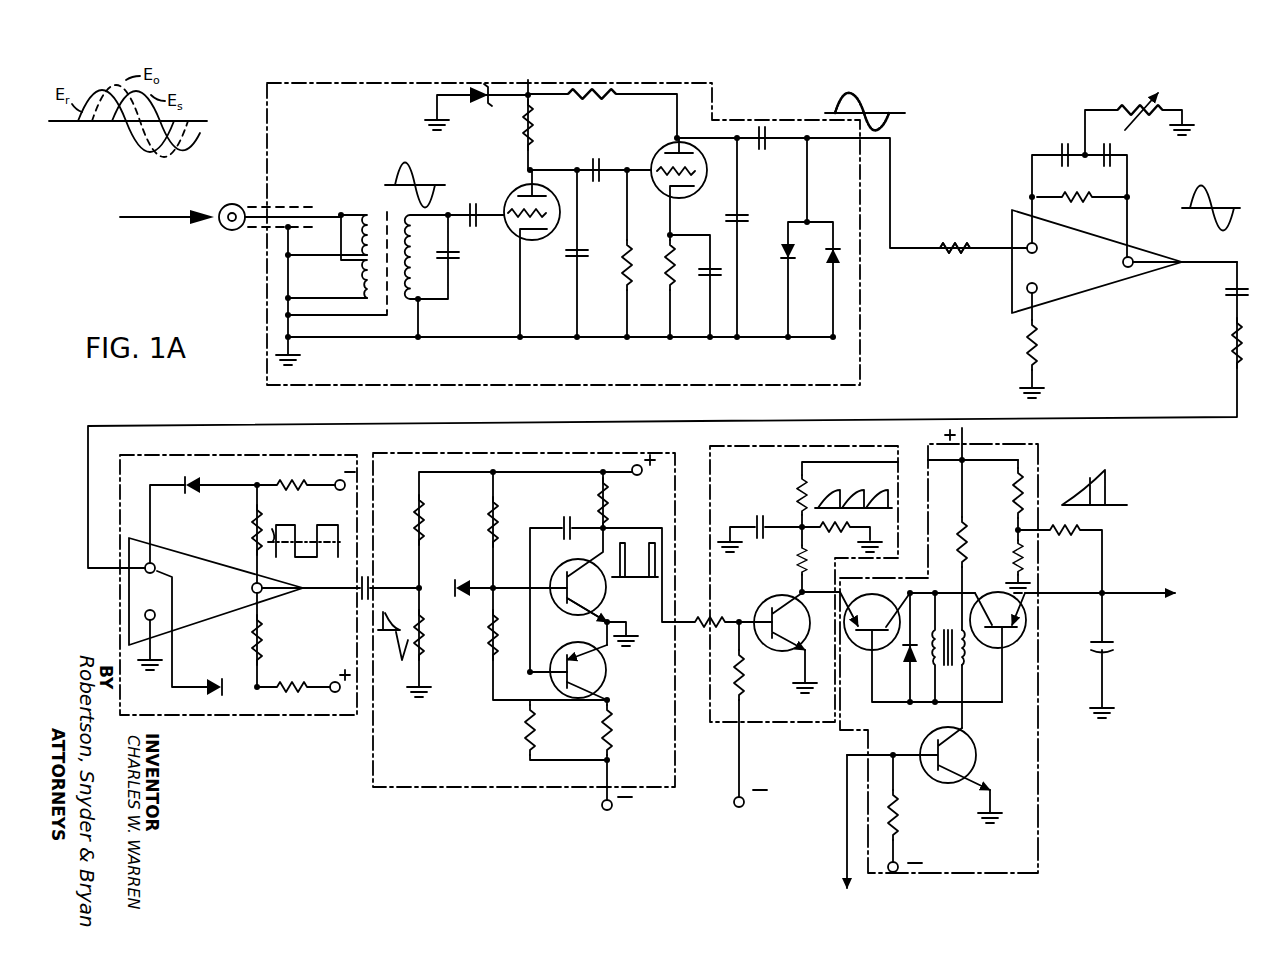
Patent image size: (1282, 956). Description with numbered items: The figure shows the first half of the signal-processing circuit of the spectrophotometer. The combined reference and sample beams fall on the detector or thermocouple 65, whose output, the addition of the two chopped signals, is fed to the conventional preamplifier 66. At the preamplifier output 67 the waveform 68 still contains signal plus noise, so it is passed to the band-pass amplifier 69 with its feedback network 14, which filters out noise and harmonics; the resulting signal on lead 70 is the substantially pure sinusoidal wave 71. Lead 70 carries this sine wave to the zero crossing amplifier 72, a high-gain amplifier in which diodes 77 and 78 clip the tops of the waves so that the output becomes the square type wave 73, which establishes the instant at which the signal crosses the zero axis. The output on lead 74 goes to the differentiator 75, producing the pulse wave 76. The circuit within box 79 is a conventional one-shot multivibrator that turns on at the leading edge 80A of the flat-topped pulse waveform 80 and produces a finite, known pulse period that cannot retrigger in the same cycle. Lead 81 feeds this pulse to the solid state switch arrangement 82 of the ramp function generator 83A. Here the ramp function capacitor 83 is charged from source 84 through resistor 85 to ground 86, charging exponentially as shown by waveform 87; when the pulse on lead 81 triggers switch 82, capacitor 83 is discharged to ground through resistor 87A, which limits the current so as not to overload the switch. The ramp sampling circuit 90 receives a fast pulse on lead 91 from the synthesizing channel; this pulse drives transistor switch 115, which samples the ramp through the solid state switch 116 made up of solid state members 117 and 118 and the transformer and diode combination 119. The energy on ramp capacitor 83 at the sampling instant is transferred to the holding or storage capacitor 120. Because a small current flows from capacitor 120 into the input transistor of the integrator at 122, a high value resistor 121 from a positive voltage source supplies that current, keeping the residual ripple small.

The feedback network 14 is at (1050, 140).
The detector or thermocouple 65 is at (238, 205).
The preamplifier 66 is at (481, 385).
The output of preamplifier 67 is at (832, 138).
The waveform of signal and noise 68 is at (893, 120).
The band-pass amplifier 69 is at (1088, 278).
The lead 70 is at (1216, 262).
The output signal waveform 71 is at (1194, 198).
The zero crossing amplifier 72 is at (240, 605).
The square type wave 73 is at (282, 526).
The lead 74 is at (343, 595).
The differentiator 75 is at (378, 586).
The pulse wave 76 is at (388, 650).
The diode 77 is at (212, 681).
The diode 78 is at (195, 490).
The one-shot multivibrator 79 is at (531, 644).
The pulse waveform 80 is at (637, 578).
The leading edge 80A is at (620, 546).
The lead 81 is at (688, 620).
The solid state switch arrangement 82 is at (762, 606).
The ramp function capacitor 83 is at (755, 522).
The ramp function generator 83A is at (918, 626).
The source 84 is at (964, 442).
The resistor 85 is at (801, 492).
The ground 86 is at (811, 548).
The ramp waveform 87 is at (876, 480).
The resistor 87A is at (799, 564).
The ramp sampling circuit 90 is at (994, 654).
The lead 91 is at (847, 826).
The transistor switch 115 is at (977, 755).
The solid state switch 116 is at (940, 586).
The solid state member 117 is at (893, 598).
The solid state member 118 is at (999, 592).
The transformer and diode combination 119 is at (970, 662).
The holding or storage capacitor 120 is at (1110, 652).
The high value resistor 121 is at (1078, 534).
The integrator input 122 is at (1104, 591).